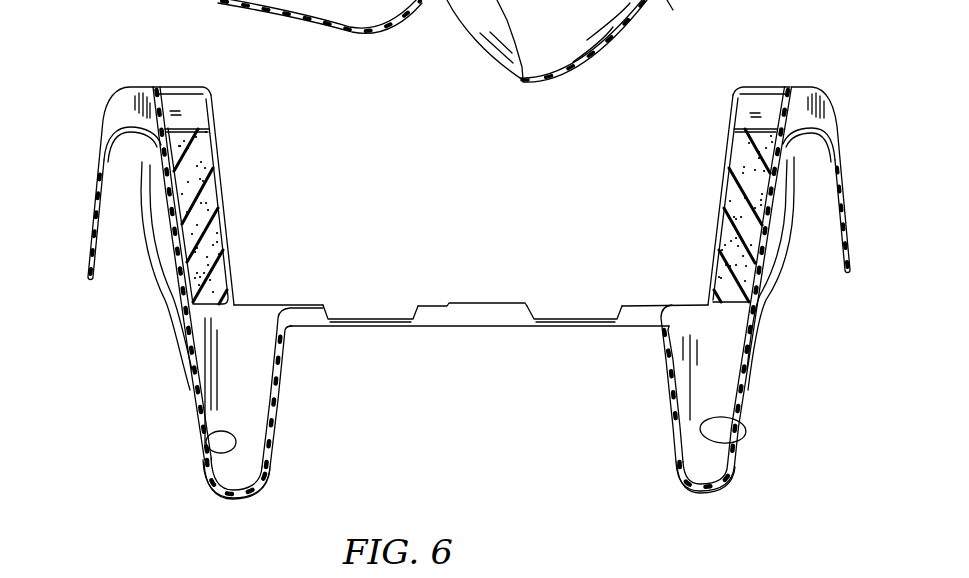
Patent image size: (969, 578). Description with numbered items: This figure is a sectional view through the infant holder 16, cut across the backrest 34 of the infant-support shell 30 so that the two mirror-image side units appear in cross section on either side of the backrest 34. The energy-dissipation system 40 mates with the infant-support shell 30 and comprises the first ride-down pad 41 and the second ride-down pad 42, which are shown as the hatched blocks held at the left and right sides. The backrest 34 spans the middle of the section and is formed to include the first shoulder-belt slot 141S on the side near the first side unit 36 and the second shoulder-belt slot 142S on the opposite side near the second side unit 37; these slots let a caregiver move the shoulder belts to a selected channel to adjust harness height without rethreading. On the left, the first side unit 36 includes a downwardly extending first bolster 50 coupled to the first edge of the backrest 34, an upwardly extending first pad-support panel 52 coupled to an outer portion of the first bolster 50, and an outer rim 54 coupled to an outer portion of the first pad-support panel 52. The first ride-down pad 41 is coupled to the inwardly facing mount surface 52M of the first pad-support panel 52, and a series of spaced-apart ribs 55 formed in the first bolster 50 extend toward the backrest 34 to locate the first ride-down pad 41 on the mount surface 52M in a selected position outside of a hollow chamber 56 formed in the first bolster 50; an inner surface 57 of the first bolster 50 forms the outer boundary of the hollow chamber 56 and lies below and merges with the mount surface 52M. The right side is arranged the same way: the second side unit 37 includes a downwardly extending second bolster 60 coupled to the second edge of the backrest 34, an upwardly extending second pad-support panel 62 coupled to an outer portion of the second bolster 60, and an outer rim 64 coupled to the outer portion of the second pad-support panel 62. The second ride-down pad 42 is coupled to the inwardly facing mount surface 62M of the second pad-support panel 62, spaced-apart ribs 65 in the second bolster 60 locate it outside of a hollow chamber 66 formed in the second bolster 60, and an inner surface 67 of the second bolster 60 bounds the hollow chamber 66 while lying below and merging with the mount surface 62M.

The infant holder 16 is at (158, 82).
The infant-support shell 30 is at (831, 90).
The backrest 34 is at (300, 303).
The first side unit 36 is at (156, 285).
The second side unit 37 is at (790, 284).
The energy-dissipation system 40 is at (310, 120).
The first ride-down pad 41 is at (222, 167).
The second ride-down pad 42 is at (711, 186).
The first bolster 50 is at (273, 479).
The first pad-support panel 52 is at (162, 210).
The mount surface 52M is at (176, 222).
The outer rim 54 is at (97, 165).
The ribs 55 is at (200, 346).
The hollow chamber 56 is at (248, 328).
The inner surface 57 is at (206, 444).
The second bolster 60 is at (675, 473).
The second pad-support panel 62 is at (785, 193).
The mount surface 62M is at (718, 214).
The outer rim 64 is at (848, 152).
The ribs 65 is at (740, 336).
The hollow chamber 66 is at (688, 322).
The inner surface 67 is at (740, 442).
The first shoulder-belt slot 141S is at (385, 323).
The second shoulder-belt slot 142S is at (556, 323).